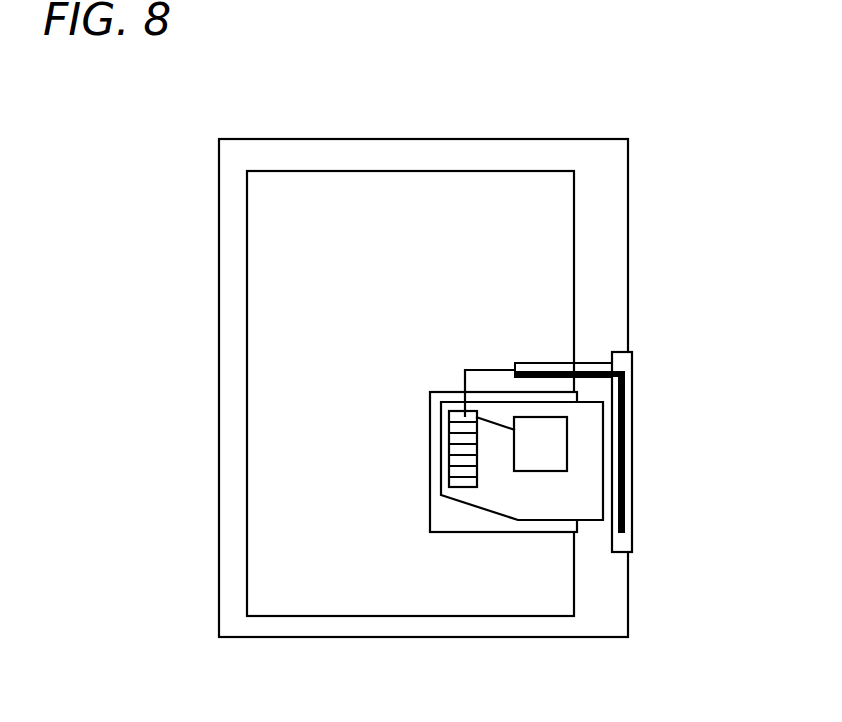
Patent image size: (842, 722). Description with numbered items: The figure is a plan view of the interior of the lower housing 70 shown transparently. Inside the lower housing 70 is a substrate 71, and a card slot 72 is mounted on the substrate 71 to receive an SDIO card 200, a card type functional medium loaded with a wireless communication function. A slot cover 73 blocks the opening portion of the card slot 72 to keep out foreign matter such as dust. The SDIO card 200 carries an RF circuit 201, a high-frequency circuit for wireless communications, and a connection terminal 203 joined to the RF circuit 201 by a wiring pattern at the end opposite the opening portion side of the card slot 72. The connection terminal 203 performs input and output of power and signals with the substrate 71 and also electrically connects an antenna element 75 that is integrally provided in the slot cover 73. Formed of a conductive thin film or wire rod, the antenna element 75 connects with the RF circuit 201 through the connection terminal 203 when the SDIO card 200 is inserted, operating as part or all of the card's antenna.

The lower housing 70 is at (313, 139).
The substrate 71 is at (442, 171).
The card slot 72 is at (490, 532).
The slot cover 73 is at (632, 452).
The antenna element 75 is at (625, 493).
The SDIO card 200 is at (548, 520).
The RF circuit 201 is at (541, 417).
The connection terminal 203 is at (465, 487).